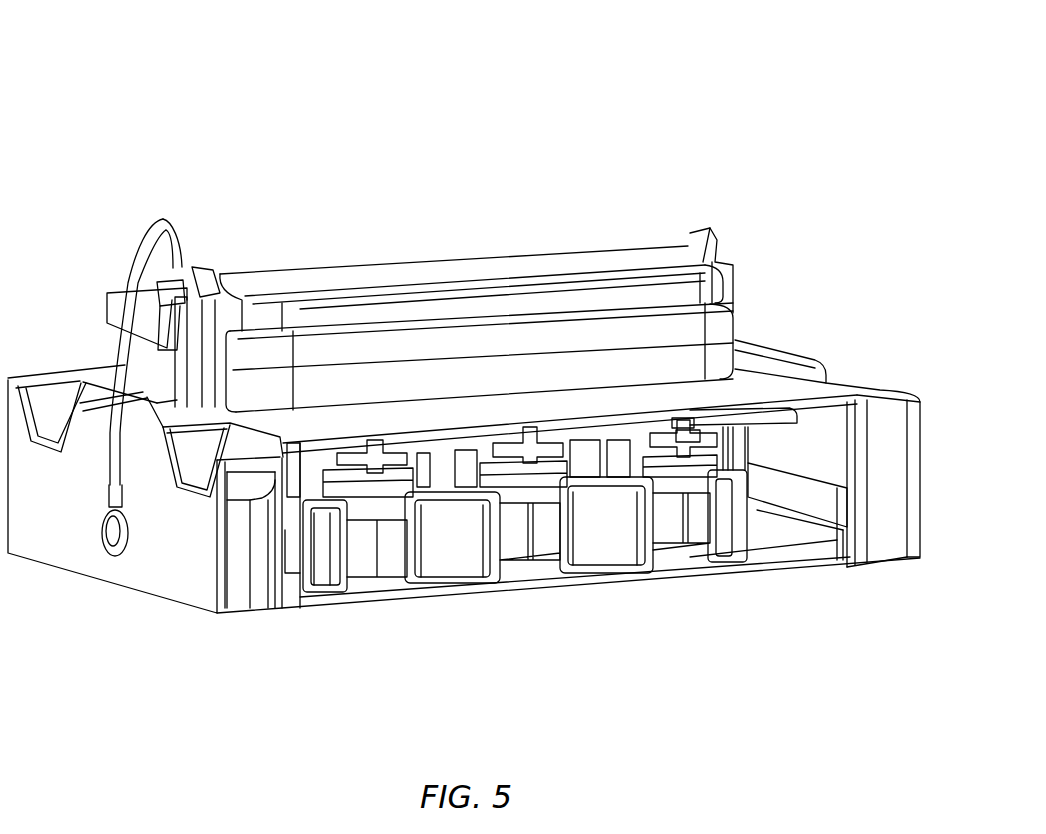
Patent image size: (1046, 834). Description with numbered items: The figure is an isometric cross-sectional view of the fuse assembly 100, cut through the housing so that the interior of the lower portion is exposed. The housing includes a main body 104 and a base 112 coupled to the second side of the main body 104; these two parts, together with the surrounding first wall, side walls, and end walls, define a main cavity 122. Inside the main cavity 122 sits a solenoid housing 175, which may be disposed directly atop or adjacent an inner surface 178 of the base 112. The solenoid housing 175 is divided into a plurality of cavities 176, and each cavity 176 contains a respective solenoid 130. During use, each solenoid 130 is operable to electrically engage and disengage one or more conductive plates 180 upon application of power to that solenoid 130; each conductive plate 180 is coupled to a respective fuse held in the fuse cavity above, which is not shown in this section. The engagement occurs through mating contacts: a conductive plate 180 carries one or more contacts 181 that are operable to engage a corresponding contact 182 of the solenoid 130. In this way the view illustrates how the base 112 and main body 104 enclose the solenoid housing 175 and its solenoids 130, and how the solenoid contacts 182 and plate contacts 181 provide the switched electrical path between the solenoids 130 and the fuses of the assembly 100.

The fuse assembly 100 is at (312, 122).
The main body 104 is at (183, 590).
The base 112 is at (770, 573).
The main cavity 122 is at (824, 445).
The solenoid 130 is at (363, 560).
The solenoid housing 175 is at (563, 555).
The cavity 176 is at (397, 595).
The inner surface 178 is at (790, 557).
The conductive plate 180 is at (433, 440).
The contact 181 is at (680, 420).
The contact 182 is at (683, 430).